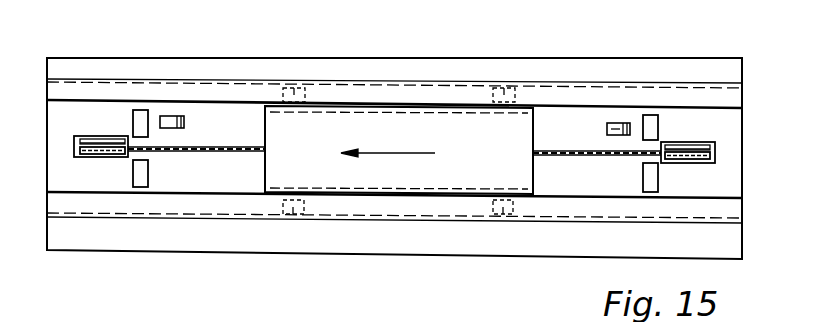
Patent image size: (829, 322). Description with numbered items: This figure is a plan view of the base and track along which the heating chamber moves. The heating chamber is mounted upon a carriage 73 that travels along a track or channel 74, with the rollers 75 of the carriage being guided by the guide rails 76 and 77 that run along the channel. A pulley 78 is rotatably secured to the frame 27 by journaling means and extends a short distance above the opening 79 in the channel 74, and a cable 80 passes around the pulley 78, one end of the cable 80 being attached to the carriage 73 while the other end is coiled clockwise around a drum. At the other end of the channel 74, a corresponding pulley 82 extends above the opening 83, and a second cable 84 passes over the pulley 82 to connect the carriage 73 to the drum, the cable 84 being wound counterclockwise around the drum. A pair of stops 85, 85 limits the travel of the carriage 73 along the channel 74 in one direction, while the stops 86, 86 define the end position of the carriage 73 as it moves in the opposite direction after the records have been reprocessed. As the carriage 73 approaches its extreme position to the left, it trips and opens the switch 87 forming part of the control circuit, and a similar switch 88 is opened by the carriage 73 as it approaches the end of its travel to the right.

The frame 27 is at (100, 240).
The carriage 73 is at (392, 181).
The track or channel 74 is at (731, 188).
The rollers 75 is at (296, 92).
The guide rail 76 is at (590, 97).
The guide rail 77 is at (560, 247).
The pulley 78 is at (96, 157).
The opening 79 is at (80, 137).
The cable 80 is at (205, 148).
The pulley 82 is at (672, 152).
The opening 83 is at (712, 163).
The second cable 84 is at (593, 155).
The stops 85 is at (140, 117).
The stops 86 is at (652, 125).
The switch 87 is at (173, 120).
The switch 88 is at (607, 128).